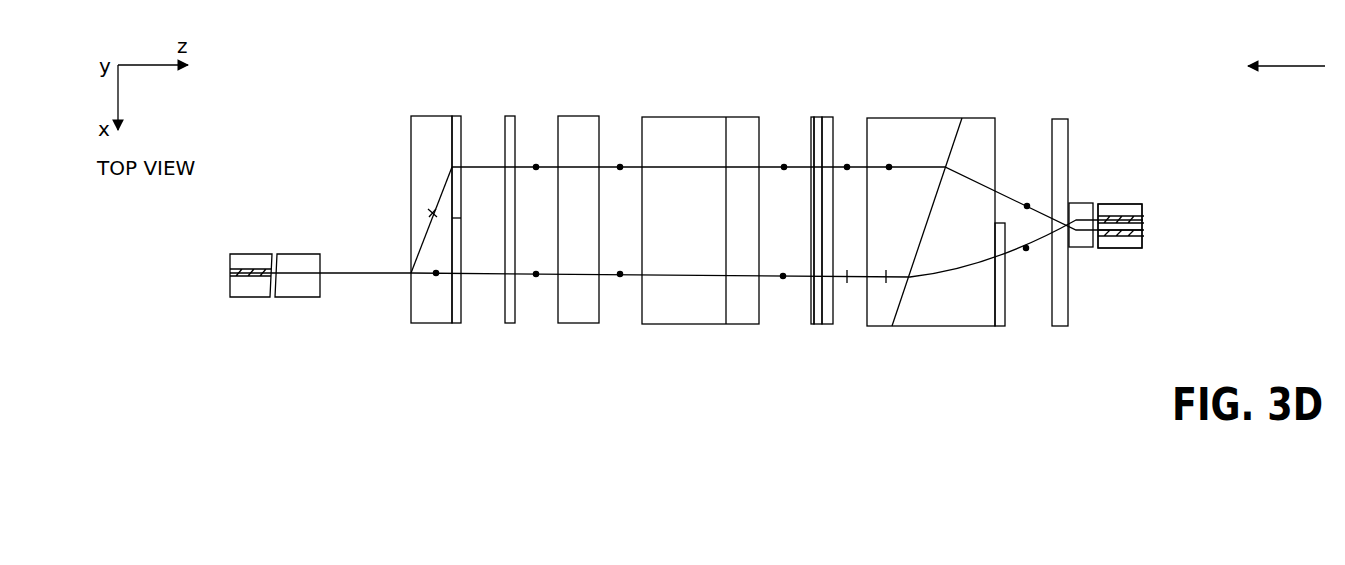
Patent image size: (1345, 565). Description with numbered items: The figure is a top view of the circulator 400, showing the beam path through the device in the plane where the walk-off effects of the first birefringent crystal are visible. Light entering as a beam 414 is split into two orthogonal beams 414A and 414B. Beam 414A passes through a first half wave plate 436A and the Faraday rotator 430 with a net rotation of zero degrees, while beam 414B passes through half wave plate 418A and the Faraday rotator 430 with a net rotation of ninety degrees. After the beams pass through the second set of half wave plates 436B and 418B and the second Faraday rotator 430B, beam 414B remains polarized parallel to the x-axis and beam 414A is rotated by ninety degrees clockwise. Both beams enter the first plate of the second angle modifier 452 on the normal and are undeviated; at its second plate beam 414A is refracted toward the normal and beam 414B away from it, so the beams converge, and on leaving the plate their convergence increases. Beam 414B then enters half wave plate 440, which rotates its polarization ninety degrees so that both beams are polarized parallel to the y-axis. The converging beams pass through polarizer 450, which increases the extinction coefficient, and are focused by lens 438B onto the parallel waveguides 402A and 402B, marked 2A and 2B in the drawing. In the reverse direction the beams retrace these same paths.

The circulator 400 is at (352, 78).
The input optical beam 414 is at (343, 273).
The beam 414A is at (544, 165).
The beam 414B is at (545, 278).
The half wave plate 418A is at (457, 323).
The half wave plate 418B is at (813, 324).
The first half wave plate 436A is at (458, 116).
The half wave plate 436B is at (816, 117).
The first polarization rotator 430 is at (510, 323).
The second Faraday rotator 430B is at (827, 324).
The second angle modifier 452 is at (935, 118).
The half wave plate 440 is at (998, 326).
The polarizer 450 is at (1060, 119).
The lens 438B is at (1082, 203).
The third waveguide 402A is at (1128, 204).
The second waveguide 402B is at (1128, 248).
The first output port 2A is at (1145, 214).
The second output port 2B is at (1145, 239).